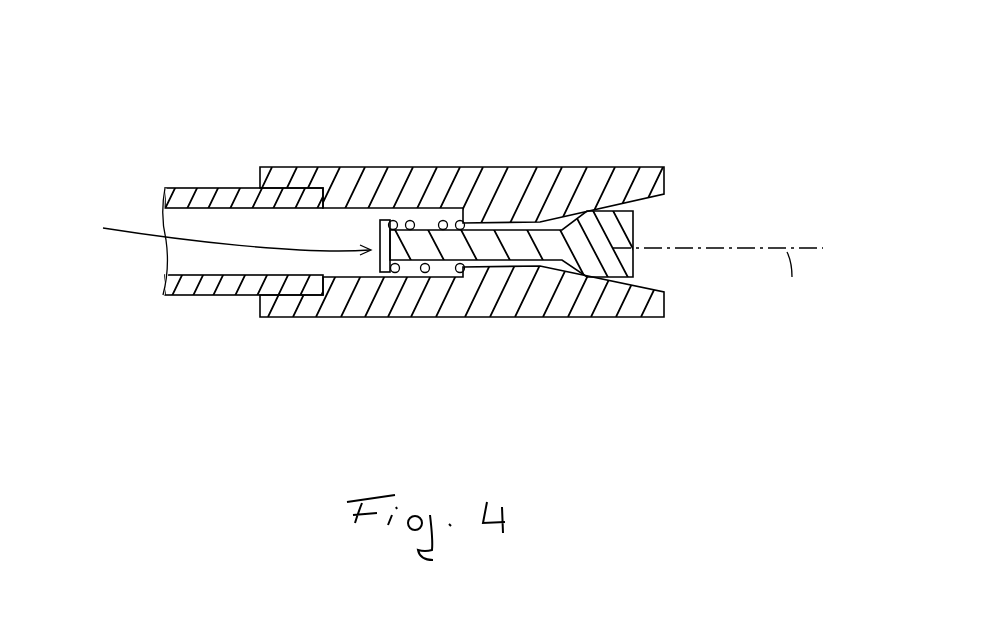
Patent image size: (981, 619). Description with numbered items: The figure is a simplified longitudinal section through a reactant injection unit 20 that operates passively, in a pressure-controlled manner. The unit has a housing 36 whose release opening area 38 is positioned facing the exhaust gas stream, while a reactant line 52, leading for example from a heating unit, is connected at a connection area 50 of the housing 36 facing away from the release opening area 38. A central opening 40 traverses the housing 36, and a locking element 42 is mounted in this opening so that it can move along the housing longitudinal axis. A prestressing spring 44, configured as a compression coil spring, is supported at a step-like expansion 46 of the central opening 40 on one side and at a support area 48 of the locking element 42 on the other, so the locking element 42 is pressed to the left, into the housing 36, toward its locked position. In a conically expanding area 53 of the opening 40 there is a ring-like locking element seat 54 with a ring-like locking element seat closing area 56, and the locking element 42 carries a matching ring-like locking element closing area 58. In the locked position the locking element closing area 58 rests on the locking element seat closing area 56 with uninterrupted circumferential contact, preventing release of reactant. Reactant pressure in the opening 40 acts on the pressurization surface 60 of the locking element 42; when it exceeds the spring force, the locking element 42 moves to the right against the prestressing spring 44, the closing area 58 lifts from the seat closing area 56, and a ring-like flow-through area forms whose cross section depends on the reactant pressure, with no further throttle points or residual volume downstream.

The reactant injection unit 20 is at (433, 235).
The housing 36 is at (325, 316).
The release opening area 38 is at (693, 278).
The opening 40 is at (504, 262).
The locking element 42 is at (480, 240).
The prestressing spring 44 is at (410, 220).
The step-like expansion 46 is at (470, 268).
The support area 48 is at (377, 223).
The connection area 50 is at (235, 307).
The reactant line 52 is at (167, 187).
The conically expanding area 53 is at (652, 196).
The locking element seat 54 is at (587, 193).
The locking element seat closing area 56 is at (637, 218).
The locking element closing area 58 is at (585, 277).
The pressurization surface 60 is at (207, 232).